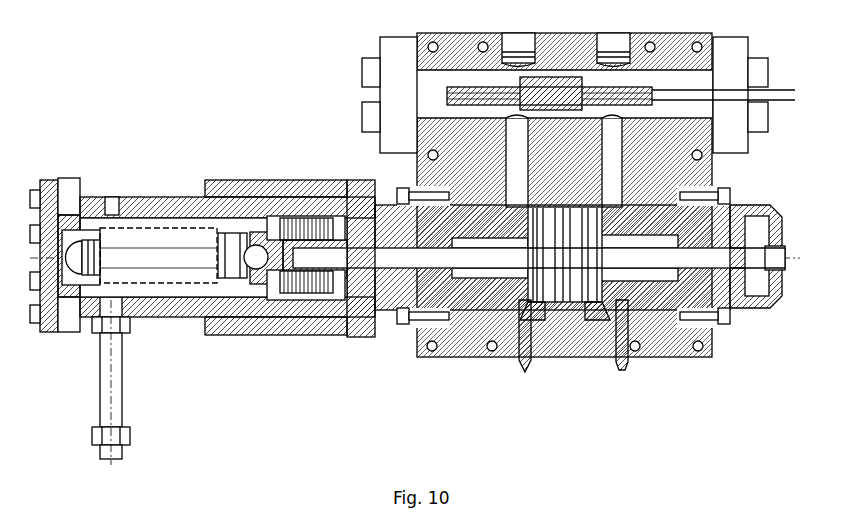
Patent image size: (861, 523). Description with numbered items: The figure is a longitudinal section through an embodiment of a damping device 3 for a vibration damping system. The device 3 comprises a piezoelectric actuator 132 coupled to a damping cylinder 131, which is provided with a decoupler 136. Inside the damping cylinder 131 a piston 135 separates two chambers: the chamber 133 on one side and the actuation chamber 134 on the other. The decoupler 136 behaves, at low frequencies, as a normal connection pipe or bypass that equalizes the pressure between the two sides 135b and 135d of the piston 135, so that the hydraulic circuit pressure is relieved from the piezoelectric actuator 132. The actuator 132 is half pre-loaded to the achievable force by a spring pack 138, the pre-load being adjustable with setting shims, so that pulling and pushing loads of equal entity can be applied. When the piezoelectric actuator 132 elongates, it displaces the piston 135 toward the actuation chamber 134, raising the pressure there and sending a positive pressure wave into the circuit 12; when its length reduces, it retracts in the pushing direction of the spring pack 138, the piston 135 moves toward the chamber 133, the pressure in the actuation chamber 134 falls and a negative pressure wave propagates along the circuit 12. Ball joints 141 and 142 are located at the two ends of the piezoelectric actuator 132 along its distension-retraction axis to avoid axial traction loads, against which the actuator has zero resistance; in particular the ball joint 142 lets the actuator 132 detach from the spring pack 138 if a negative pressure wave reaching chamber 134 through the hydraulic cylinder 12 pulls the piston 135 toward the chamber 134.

The pump assembly 3 is at (165, 78).
The circuit 12 is at (777, 92).
The damping cylinder 131 is at (760, 206).
The piezoelectric actuator 132 is at (158, 255).
The chamber 133 is at (527, 375).
The actuation chamber 134 is at (593, 285).
The piston 135 is at (567, 285).
The side of the piston 135b is at (540, 287).
The side of the piston 135d is at (600, 293).
The decoupler 136 is at (445, 92).
The spring pack 138 is at (307, 243).
The ball joint 141 is at (80, 297).
The ball joint 142 is at (250, 245).